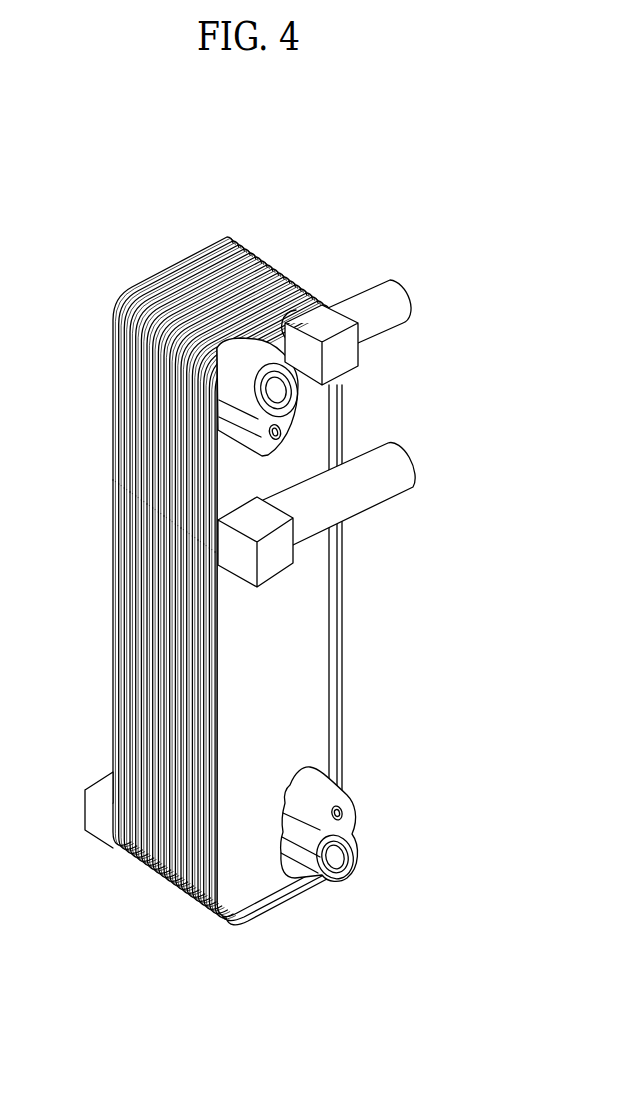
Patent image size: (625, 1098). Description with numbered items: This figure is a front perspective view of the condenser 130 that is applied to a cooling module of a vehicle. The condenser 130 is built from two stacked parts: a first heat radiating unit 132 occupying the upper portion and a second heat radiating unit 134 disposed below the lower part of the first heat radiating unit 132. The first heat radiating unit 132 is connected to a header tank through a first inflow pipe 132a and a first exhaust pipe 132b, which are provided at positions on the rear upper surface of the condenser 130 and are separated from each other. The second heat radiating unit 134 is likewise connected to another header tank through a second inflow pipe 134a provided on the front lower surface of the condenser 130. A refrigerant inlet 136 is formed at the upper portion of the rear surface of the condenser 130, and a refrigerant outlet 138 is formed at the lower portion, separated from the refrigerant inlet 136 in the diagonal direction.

The condenser 130 is at (256, 540).
The first heat radiating unit 132 is at (71, 300).
The first inflow pipe 132a is at (402, 303).
The first exhaust pipe 132b is at (402, 455).
The second heat radiating unit 134 is at (71, 485).
The second inflow pipe 134a is at (98, 826).
The refrigerant inlet 136 is at (292, 406).
The refrigerant outlet 138 is at (352, 871).